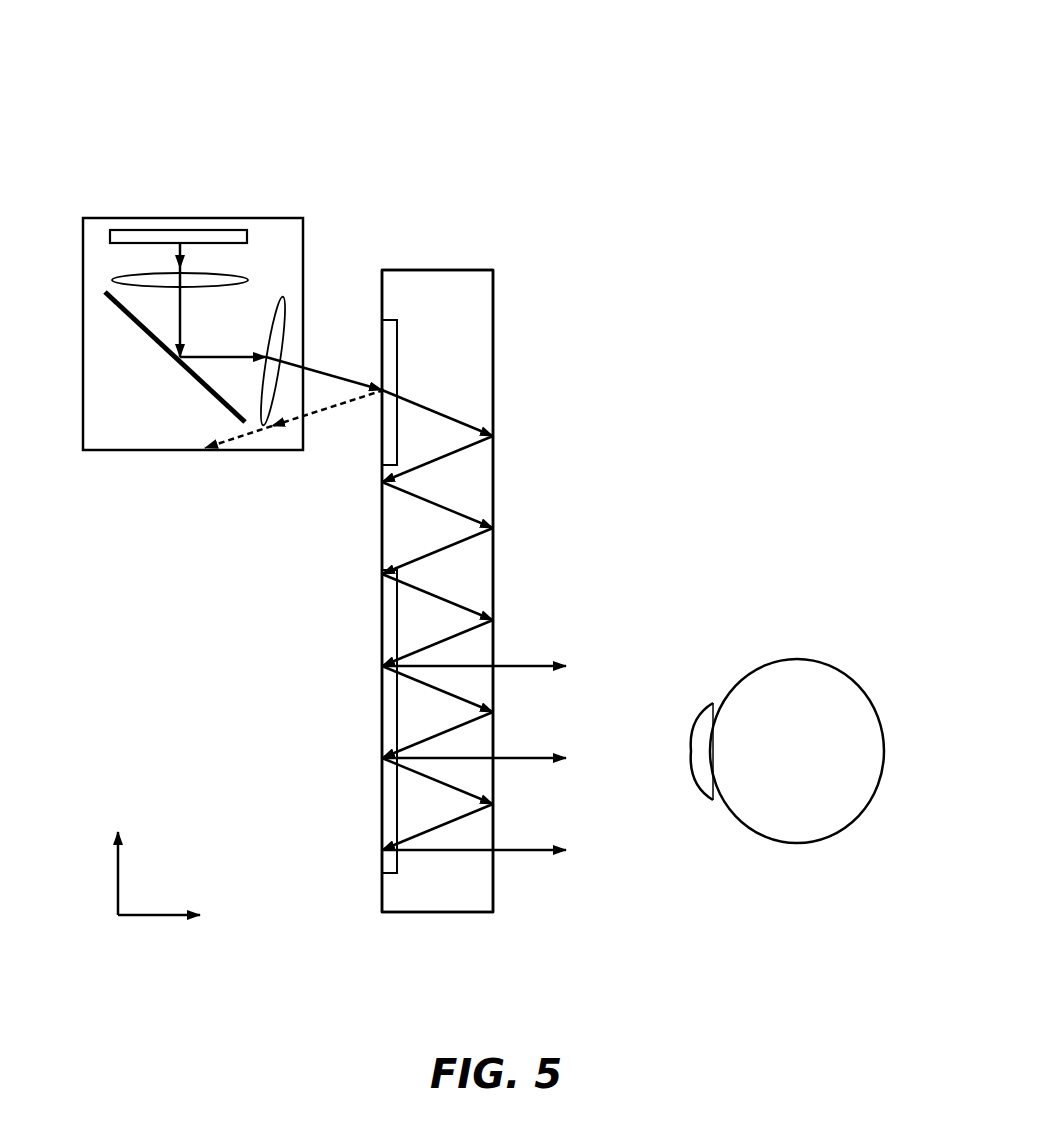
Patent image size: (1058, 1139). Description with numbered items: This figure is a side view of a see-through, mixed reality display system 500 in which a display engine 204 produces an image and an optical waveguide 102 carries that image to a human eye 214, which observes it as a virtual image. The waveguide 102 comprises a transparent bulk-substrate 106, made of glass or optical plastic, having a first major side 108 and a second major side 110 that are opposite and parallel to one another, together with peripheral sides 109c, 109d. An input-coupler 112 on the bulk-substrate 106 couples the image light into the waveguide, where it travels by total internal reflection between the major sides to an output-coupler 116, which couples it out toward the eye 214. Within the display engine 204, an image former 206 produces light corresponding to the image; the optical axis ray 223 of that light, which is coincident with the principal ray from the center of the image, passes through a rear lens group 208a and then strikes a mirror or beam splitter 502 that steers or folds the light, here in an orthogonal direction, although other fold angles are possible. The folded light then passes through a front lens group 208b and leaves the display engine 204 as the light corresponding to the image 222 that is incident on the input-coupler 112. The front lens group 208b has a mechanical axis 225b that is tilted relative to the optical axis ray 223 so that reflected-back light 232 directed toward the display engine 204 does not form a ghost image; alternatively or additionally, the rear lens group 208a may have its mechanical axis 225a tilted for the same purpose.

The see-through, mixed reality display system 500 is at (460, 33).
The optical waveguide 102 is at (412, 208).
The bulk-substrate 106 is at (451, 308).
The first major side 108 is at (496, 303).
The second major side 110 is at (380, 282).
The peripheral side 109c is at (445, 270).
The peripheral side 109d is at (472, 912).
The input-coupler 112 is at (380, 350).
The output-coupler 116 is at (380, 822).
The display engine 204 is at (202, 218).
The image former 206 is at (103, 234).
The rear lens group 208a is at (171, 269).
The front lens group 208b is at (282, 423).
The human eye 214 is at (822, 690).
The light corresponding to an image 222 is at (336, 377).
The optical axis ray 223 is at (175, 250).
The mechanical axis 225a is at (195, 285).
The mechanical axis 225b is at (272, 357).
The reflected-back light 232 is at (322, 412).
The mirror or beam splitter 502 is at (152, 343).